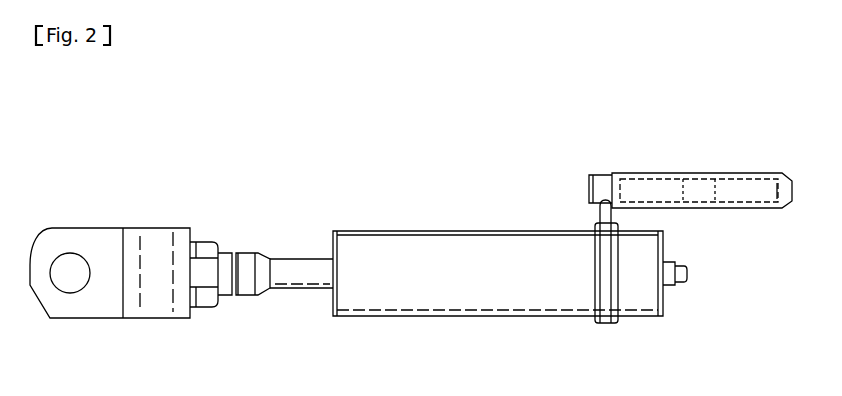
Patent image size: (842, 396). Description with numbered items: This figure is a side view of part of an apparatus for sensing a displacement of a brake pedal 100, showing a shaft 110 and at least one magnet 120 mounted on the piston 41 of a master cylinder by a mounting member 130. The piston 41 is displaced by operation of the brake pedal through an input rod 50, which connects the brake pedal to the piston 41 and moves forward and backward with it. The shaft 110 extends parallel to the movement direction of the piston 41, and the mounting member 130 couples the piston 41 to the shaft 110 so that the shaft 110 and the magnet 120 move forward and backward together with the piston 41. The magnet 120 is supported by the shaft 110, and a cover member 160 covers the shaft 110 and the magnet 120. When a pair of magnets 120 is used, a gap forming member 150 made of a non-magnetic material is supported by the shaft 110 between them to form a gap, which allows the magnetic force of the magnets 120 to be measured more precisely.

The piston 41 is at (435, 313).
The input rod 50 is at (293, 268).
The apparatus for sensing a displacement of a brake pedal 100 is at (583, 166).
The shaft 110 is at (588, 190).
The magnet 120 is at (665, 198).
The mounting member 130 is at (597, 218).
The gap forming member 150 is at (702, 188).
The cover member 160 is at (662, 173).